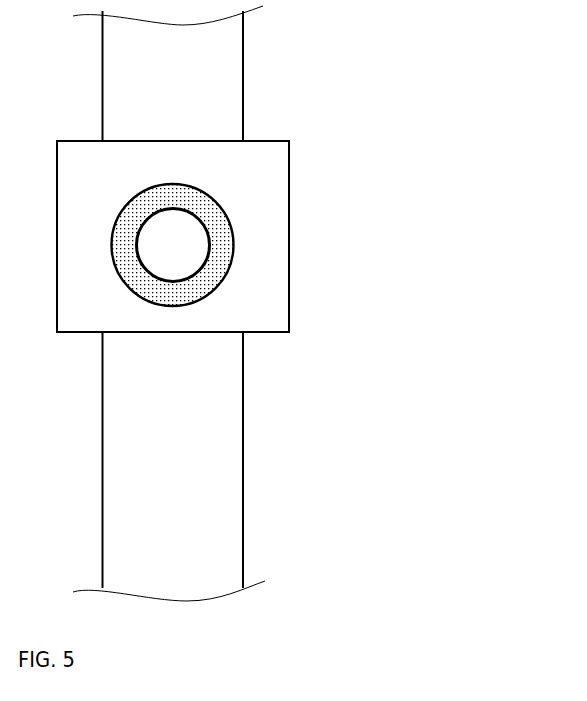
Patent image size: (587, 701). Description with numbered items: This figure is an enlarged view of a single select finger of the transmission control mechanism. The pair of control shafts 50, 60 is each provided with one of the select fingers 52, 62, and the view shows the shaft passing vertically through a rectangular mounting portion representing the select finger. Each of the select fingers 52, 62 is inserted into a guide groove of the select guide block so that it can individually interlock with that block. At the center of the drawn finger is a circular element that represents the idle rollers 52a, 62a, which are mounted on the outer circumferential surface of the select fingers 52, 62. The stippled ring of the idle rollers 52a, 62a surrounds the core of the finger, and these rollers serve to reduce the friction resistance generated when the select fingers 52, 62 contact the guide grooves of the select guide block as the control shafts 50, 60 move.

The control shaft 50 is at (279, 303).
The control shaft 60 is at (213, 455).
The select finger 52 is at (305, 231).
The select finger 62 is at (182, 237).
The idle roller 52a is at (307, 257).
The idle roller 62a is at (218, 288).